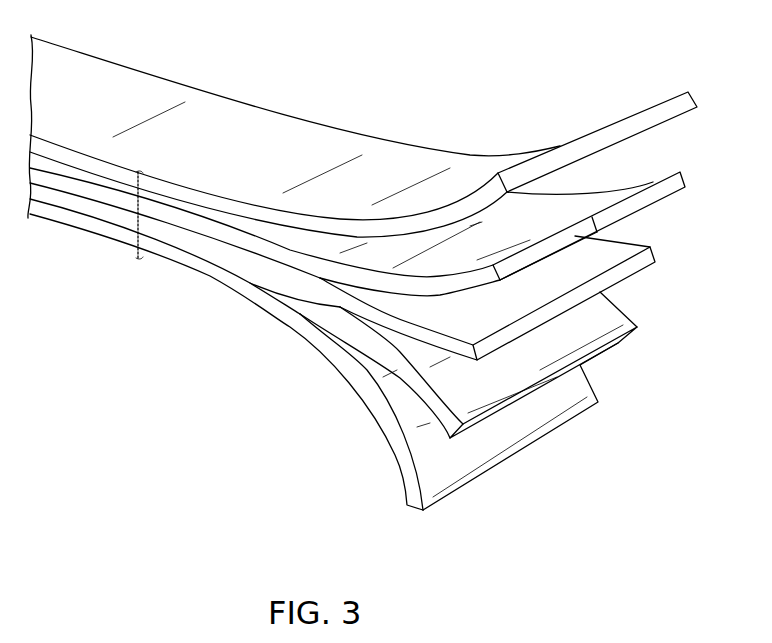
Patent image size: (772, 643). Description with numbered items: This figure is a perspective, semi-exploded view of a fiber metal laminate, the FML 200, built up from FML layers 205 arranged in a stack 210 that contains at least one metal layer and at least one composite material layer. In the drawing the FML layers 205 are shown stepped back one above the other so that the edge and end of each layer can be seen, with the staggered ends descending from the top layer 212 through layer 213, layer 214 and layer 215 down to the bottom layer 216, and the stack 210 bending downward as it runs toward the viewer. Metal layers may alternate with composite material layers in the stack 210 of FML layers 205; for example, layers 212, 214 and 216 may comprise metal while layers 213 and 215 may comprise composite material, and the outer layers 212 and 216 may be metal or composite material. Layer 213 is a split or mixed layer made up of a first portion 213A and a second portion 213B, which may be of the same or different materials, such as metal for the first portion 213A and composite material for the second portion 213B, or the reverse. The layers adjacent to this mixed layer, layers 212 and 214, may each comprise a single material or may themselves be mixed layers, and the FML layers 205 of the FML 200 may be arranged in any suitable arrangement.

The FML 200 is at (322, 82).
The FML layers 205 is at (338, 392).
The stack 210 is at (136, 217).
The layer 212 is at (690, 110).
The layer 213 is at (686, 183).
The first portion 213A is at (577, 236).
The second portion 213B is at (658, 190).
The layer 214 is at (640, 268).
The layer 215 is at (618, 343).
The layer 216 is at (413, 488).